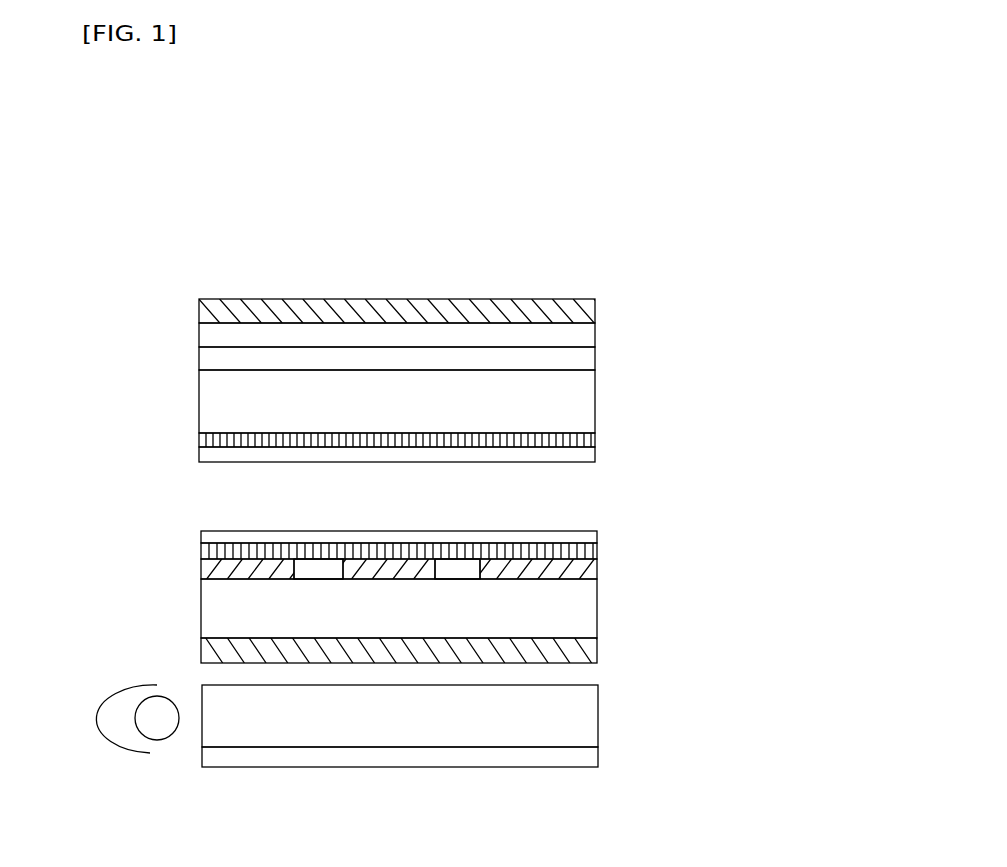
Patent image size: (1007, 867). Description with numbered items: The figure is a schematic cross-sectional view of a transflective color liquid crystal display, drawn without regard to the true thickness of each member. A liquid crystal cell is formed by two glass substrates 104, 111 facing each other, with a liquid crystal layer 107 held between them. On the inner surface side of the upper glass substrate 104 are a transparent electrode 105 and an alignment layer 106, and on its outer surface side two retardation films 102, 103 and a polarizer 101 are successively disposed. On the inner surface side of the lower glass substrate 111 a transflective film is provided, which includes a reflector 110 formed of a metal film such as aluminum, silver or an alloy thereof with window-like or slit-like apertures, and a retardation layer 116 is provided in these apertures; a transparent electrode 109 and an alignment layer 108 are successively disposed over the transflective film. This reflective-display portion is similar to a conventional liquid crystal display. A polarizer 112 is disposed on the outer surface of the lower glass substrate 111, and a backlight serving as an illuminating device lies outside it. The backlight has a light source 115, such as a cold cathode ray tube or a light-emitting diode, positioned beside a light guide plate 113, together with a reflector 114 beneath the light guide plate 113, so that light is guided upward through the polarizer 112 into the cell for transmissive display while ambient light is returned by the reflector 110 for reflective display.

The polarizer 101 is at (558, 306).
The retardation film 102 is at (560, 337).
The retardation film 103 is at (563, 357).
The glass substrate 104 is at (568, 408).
The transparent electrode 105 is at (570, 436).
The alignment layer 106 is at (550, 454).
The liquid crystal layer 107 is at (778, 495).
The alignment layer 108 is at (572, 533).
The transparent electrode 109 is at (575, 552).
The reflector 110 is at (567, 577).
The glass substrate 111 is at (548, 610).
The polarizer 112 is at (553, 648).
The light guide plate 113 is at (558, 720).
The reflector 114 is at (432, 757).
The light source 115 is at (152, 727).
The retardation layer 116 is at (313, 568).